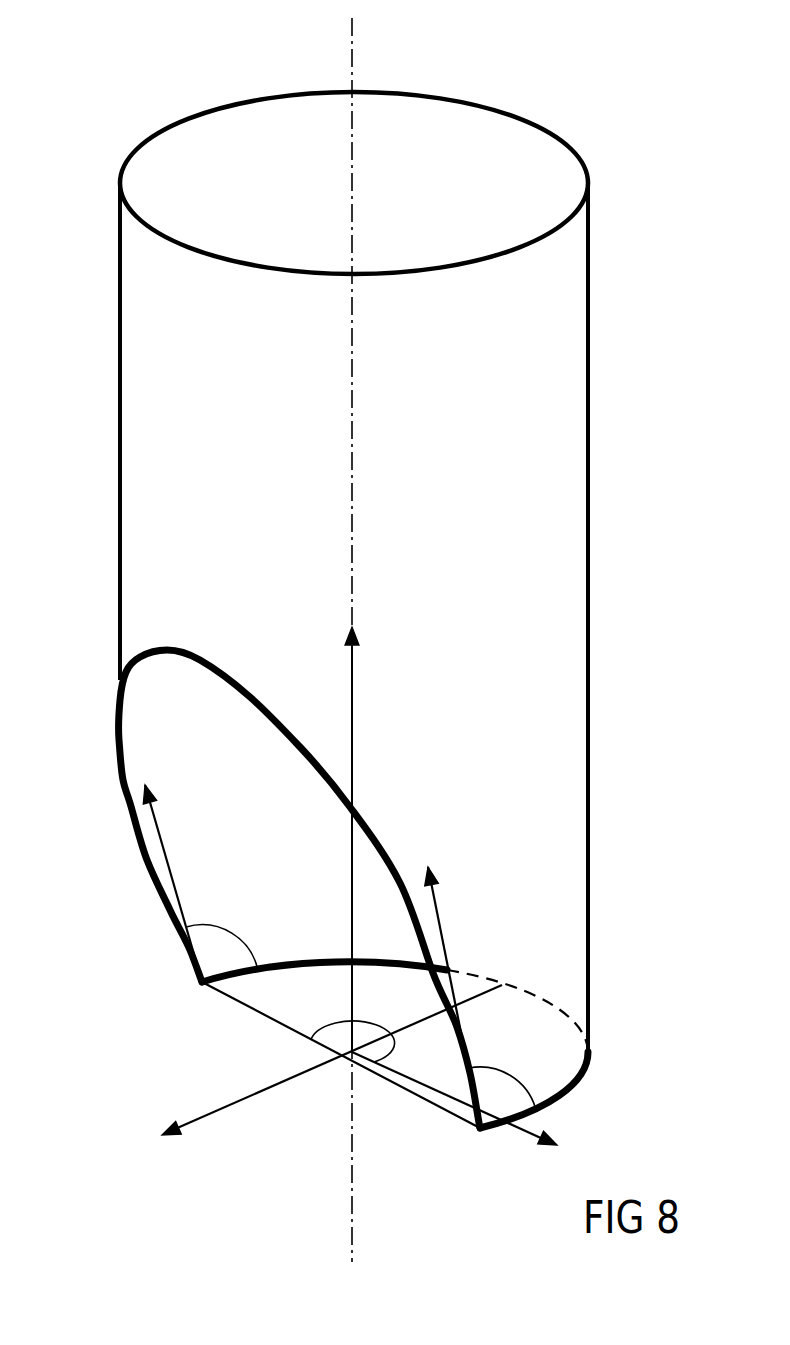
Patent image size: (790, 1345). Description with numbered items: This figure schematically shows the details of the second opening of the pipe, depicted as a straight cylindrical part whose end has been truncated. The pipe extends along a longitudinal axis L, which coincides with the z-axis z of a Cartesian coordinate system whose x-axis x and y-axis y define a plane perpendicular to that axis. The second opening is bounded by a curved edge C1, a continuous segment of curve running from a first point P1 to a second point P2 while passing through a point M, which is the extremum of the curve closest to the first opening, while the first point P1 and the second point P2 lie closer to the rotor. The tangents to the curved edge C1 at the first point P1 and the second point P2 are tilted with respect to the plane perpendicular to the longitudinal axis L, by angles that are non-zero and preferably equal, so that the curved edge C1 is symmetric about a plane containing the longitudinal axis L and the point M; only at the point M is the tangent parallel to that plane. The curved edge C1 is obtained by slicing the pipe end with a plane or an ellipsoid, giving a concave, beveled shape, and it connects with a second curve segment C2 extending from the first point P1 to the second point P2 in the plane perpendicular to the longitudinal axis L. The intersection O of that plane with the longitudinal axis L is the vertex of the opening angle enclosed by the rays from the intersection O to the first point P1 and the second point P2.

The longitudinal axis L is at (373, 639).
The point M is at (175, 647).
The curved edge C1 is at (145, 865).
The second curve segment C2 is at (590, 1068).
The first point P1 is at (483, 1130).
The second point P2 is at (197, 985).
The intersection point O is at (341, 1055).
The x-axis x is at (325, 1075).
The y-axis y is at (466, 1107).
The z-axis z is at (368, 830).